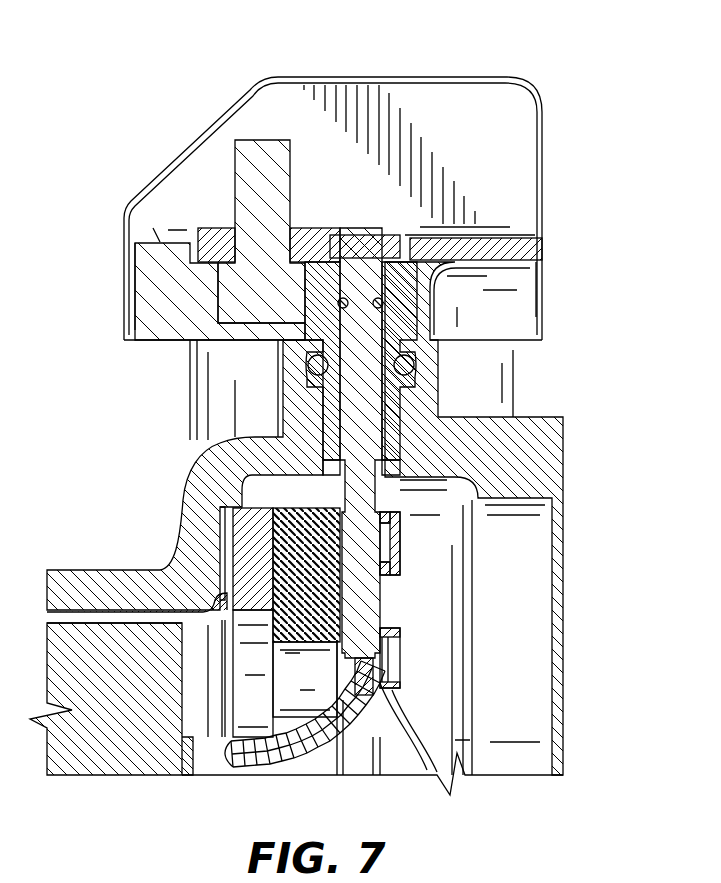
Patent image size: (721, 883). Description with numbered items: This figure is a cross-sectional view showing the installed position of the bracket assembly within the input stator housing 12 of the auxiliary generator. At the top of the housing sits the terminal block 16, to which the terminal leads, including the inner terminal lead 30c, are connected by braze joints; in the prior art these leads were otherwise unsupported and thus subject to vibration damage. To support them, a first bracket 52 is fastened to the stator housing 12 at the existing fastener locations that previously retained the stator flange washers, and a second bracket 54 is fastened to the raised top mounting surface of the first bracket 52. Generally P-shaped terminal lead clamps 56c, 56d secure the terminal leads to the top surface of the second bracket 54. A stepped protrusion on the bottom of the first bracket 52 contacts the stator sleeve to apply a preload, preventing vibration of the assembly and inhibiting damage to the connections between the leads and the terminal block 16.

The input stator housing 12 is at (563, 430).
The terminal block 16 is at (477, 108).
The inner terminal lead 30c is at (373, 598).
The first bracket 52 is at (248, 555).
The second bracket 54 is at (303, 523).
The terminal lead clamp 56c is at (402, 542).
The terminal lead clamp 56d is at (402, 657).